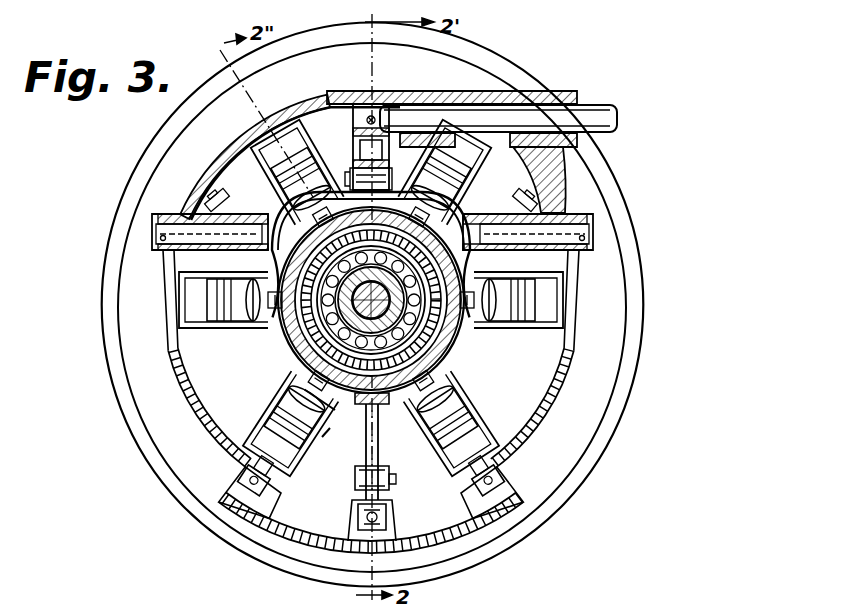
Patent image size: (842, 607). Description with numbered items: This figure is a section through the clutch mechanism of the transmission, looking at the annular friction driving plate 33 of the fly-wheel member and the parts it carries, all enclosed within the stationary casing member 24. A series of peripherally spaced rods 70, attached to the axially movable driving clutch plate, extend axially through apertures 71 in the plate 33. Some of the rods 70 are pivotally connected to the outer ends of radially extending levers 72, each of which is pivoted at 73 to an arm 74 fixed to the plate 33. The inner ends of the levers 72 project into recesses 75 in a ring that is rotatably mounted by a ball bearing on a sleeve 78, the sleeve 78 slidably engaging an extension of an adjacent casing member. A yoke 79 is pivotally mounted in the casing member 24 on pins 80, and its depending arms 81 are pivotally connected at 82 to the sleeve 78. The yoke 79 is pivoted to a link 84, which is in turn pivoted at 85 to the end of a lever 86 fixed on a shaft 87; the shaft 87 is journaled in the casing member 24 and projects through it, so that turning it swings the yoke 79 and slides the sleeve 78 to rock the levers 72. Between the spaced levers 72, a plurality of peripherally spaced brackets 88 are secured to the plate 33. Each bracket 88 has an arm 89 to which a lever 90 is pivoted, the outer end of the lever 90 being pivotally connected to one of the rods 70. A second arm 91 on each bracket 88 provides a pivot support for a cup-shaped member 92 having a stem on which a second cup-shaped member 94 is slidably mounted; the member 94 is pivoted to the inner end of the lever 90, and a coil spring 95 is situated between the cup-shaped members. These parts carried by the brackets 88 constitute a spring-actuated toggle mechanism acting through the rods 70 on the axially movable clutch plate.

The casing member 24 is at (452, 96).
The annular friction driving plate 33 is at (300, 540).
The rods 70 is at (265, 502).
The apertures 71 is at (238, 478).
The levers 72 is at (378, 433).
The pivot 73 is at (224, 203).
The arms 74 is at (386, 472).
The recesses 75 is at (360, 405).
The sleeve 78 is at (300, 352).
The yoke 79 is at (460, 205).
The pins 80 is at (185, 228).
The depending arms 81 is at (255, 326).
The pivotal connection 82 is at (292, 335).
The link 84 is at (383, 150).
The pivot 85 is at (352, 172).
The lever 86 is at (356, 133).
The shaft 87 is at (412, 105).
The brackets 88 is at (275, 437).
The arm 89 is at (296, 470).
The lever 90 is at (282, 178).
The second arm 91 is at (335, 432).
The cup-shaped member 92 is at (300, 388).
The second cup-shaped member 94 is at (287, 410).
The coil spring 95 is at (287, 397).